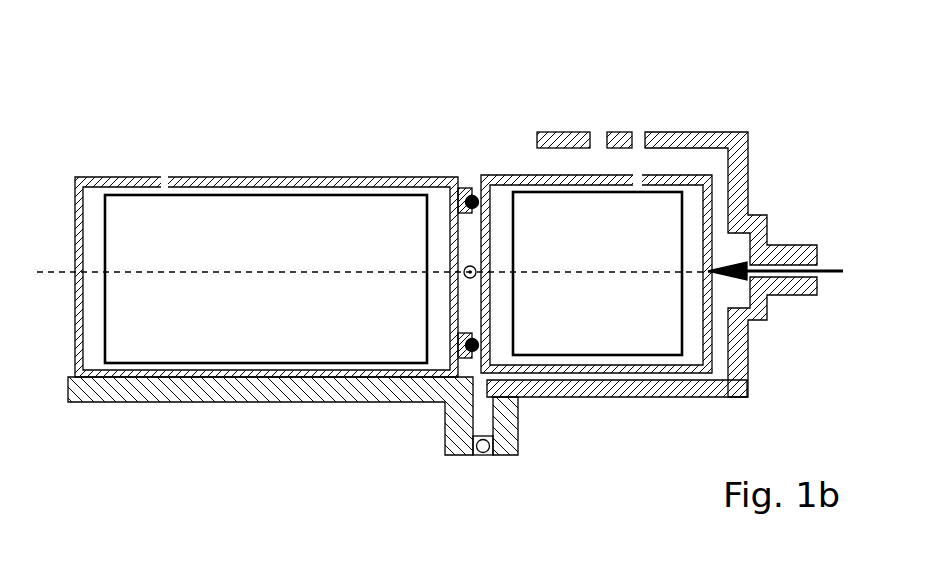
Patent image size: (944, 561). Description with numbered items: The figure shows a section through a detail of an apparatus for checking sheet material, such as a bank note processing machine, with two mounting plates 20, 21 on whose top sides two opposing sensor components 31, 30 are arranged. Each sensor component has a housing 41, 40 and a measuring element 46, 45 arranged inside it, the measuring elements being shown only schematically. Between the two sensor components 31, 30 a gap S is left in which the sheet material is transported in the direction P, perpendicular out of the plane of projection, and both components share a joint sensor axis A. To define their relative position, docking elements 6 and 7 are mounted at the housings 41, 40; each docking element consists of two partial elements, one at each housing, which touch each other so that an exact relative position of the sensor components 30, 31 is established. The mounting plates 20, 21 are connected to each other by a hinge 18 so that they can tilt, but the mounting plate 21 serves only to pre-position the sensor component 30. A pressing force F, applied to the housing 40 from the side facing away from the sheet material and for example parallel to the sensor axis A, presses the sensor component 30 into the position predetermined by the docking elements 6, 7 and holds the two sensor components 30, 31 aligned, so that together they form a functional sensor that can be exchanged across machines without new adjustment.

The sensor component 31 is at (266, 231).
The housing 41 is at (252, 177).
The measuring element 46 is at (166, 193).
The sensor component 30 is at (598, 166).
The housing 40 is at (638, 172).
The measuring element 45 is at (682, 197).
The docking element 6 is at (468, 187).
The docking element 7 is at (468, 334).
The gap S is at (464, 230).
The transport direction P is at (470, 260).
The sensor axis A is at (381, 264).
The pressing force F is at (775, 263).
The mounting plate 20 is at (288, 405).
The mounting plate 21 is at (582, 398).
The hinge 18 is at (482, 456).